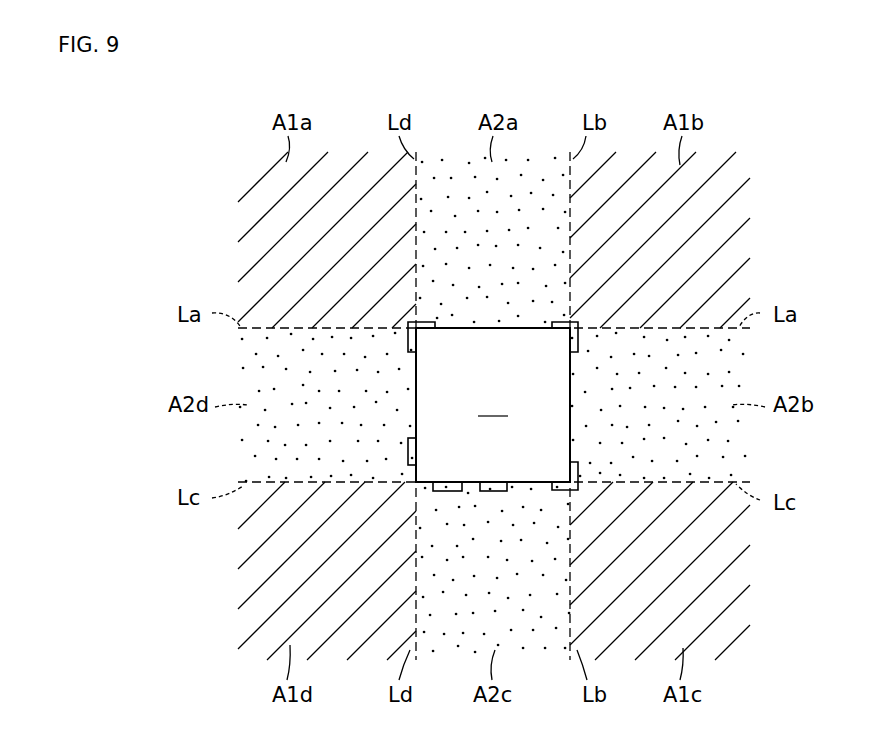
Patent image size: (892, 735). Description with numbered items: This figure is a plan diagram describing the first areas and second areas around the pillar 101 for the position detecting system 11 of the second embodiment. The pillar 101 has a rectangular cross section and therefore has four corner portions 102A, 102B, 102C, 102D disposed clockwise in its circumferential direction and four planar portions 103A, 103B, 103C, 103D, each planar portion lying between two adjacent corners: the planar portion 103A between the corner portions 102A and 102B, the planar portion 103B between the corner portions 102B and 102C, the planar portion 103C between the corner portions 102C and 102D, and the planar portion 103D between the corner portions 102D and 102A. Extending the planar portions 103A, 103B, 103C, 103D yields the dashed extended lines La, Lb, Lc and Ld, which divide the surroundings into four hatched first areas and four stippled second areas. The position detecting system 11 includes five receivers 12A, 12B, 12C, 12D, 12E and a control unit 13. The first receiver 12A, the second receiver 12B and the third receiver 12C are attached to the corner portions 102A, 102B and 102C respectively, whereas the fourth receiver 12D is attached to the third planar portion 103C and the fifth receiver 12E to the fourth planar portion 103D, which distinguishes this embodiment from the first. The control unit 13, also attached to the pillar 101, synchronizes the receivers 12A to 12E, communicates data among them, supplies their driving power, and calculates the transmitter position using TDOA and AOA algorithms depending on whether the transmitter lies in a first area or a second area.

The position detecting system 11 is at (519, 314).
The first receiver 12A is at (412, 326).
The second receiver 12B is at (573, 323).
The third receiver 12C is at (578, 490).
The fourth receiver 12D is at (450, 492).
The fifth receiver 12E is at (408, 452).
The control unit 13 is at (506, 492).
The pillar 101 is at (487, 421).
The corner portion 102A is at (409, 337).
The second corner portion 102B is at (578, 337).
The third corner portion 102C is at (578, 480).
The corner portion 102D is at (412, 488).
The planar portion 103A is at (467, 328).
The planar portion 103B is at (573, 408).
The third planar portion 103C is at (470, 492).
The fourth planar portion 103D is at (413, 408).